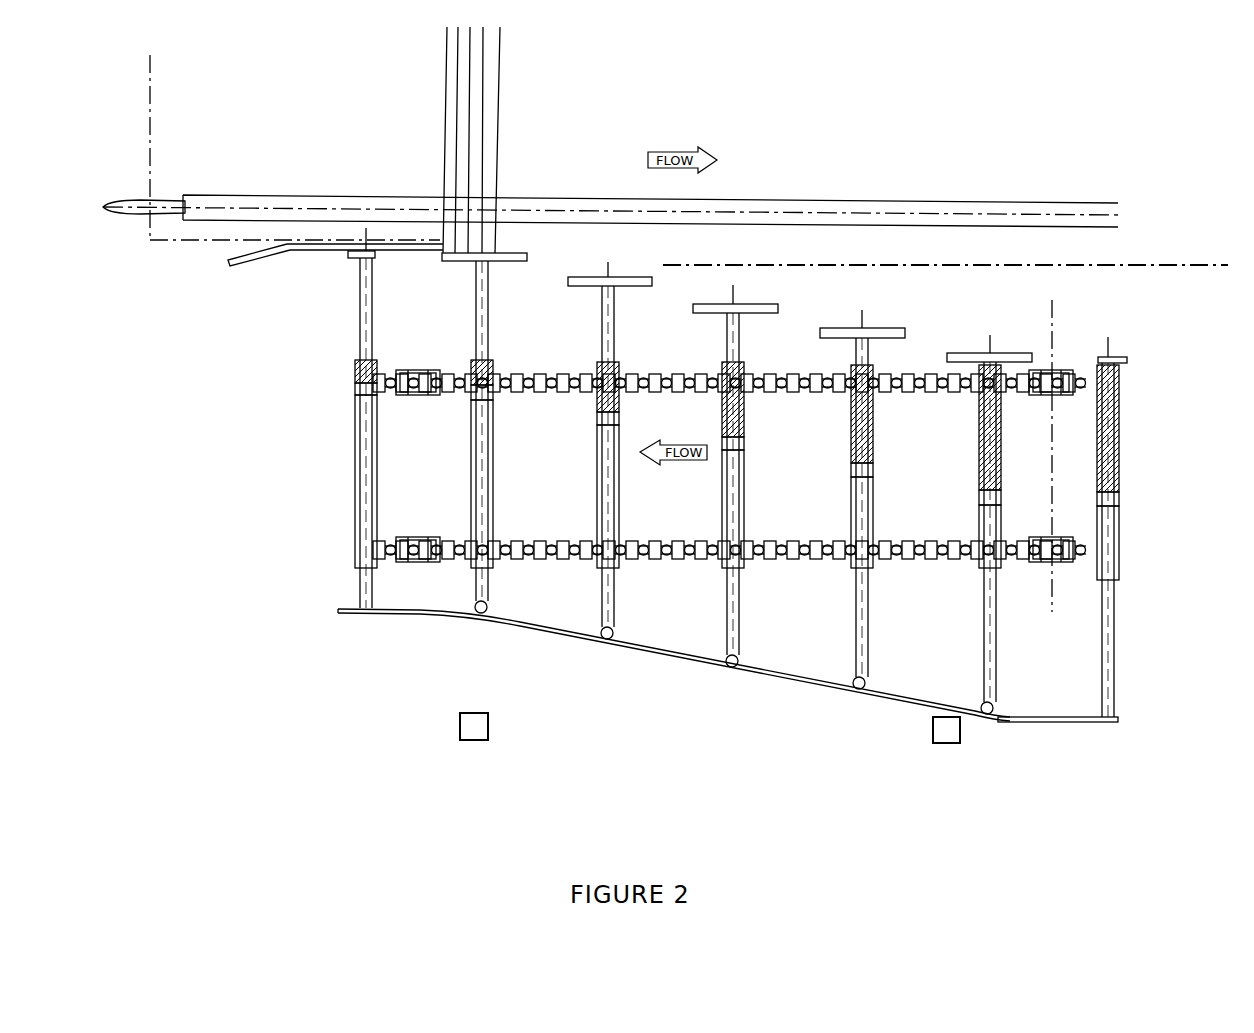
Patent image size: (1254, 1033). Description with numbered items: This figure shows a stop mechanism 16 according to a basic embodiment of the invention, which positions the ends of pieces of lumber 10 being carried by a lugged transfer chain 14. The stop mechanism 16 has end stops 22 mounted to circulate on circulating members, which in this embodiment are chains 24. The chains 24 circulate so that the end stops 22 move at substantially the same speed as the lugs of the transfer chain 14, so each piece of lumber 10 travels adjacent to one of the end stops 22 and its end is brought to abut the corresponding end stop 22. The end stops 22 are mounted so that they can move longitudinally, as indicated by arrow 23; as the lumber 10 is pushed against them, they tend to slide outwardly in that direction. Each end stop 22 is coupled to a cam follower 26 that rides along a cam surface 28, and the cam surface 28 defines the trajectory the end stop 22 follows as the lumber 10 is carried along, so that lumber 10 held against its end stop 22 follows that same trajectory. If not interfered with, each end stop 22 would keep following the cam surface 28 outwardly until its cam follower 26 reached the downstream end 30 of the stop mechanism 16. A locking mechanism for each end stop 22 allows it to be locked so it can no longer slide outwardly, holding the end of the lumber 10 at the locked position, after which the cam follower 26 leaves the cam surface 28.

The lumber 10 is at (500, 130).
The transfer chain 14 is at (763, 200).
The stop mechanism 16 is at (1132, 490).
The end stop 22 is at (845, 330).
The arrow 23 is at (450, 290).
The chain 24 is at (540, 392).
The cam follower 26 is at (490, 607).
The cam surface 28 is at (780, 670).
The downstream end 30 is at (1008, 697).